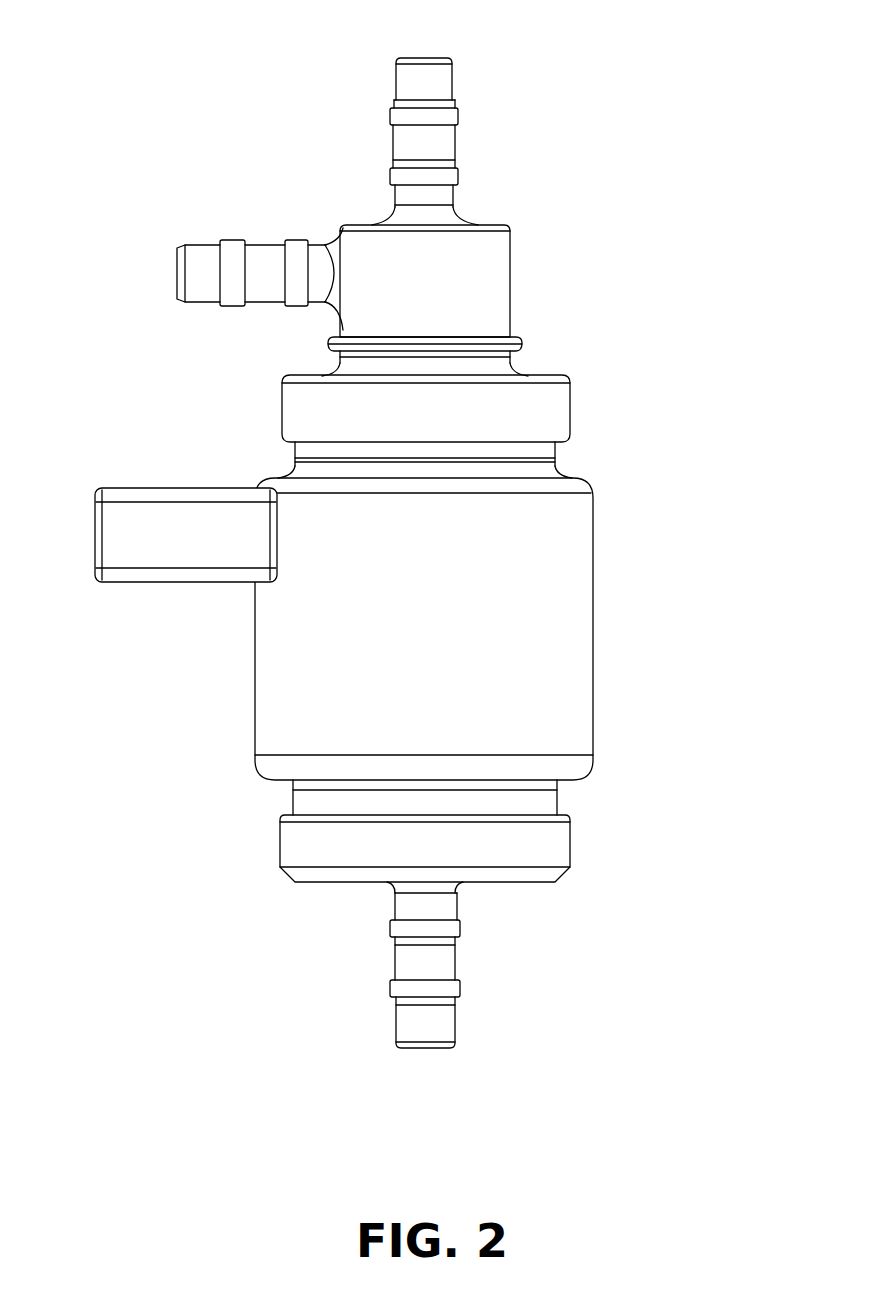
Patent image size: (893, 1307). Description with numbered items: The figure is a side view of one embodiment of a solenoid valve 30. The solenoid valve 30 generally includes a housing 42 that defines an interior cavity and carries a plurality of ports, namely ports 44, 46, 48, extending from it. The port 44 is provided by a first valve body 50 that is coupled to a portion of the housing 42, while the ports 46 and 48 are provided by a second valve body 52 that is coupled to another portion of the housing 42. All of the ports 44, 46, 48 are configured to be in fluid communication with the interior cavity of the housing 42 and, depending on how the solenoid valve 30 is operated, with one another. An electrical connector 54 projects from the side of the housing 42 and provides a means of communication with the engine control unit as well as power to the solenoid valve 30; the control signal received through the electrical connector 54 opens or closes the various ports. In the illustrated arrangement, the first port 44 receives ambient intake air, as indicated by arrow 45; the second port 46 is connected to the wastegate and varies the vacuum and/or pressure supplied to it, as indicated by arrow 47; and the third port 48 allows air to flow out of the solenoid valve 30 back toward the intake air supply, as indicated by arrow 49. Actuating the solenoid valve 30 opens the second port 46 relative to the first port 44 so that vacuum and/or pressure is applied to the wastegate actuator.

The solenoid valve 30 is at (137, 158).
The housing 42 is at (560, 620).
The port 44 is at (450, 1005).
The arrow 45 is at (423, 1073).
The port 46 is at (237, 304).
The arrow 47 is at (176, 275).
The port 48 is at (447, 130).
The arrow 49 is at (423, 56).
The first valve body 50 is at (568, 852).
The second valve body 52 is at (500, 266).
The electrical connector 54 is at (152, 578).